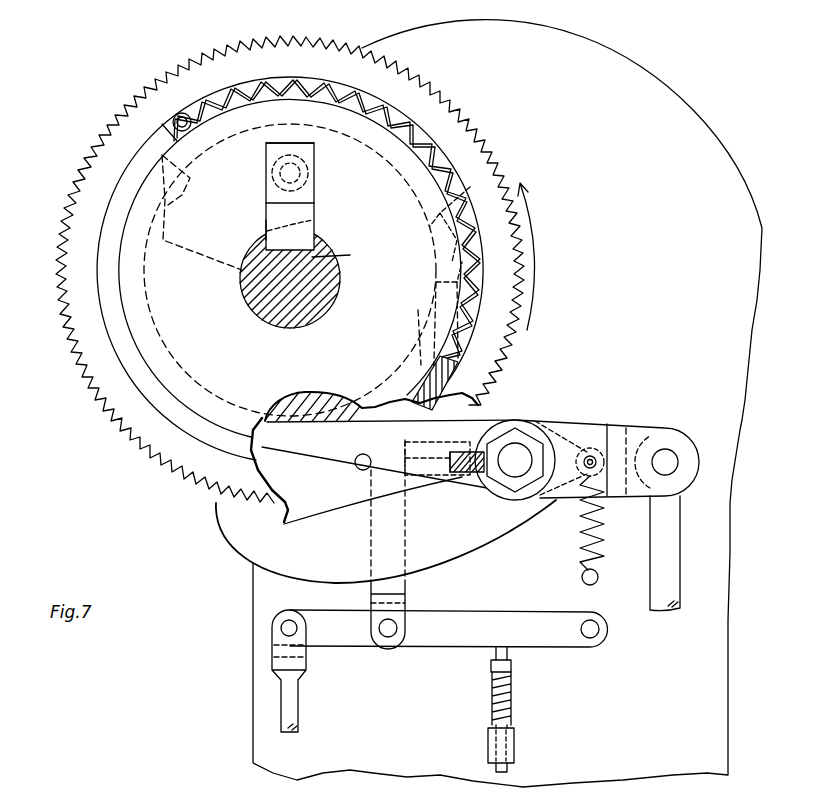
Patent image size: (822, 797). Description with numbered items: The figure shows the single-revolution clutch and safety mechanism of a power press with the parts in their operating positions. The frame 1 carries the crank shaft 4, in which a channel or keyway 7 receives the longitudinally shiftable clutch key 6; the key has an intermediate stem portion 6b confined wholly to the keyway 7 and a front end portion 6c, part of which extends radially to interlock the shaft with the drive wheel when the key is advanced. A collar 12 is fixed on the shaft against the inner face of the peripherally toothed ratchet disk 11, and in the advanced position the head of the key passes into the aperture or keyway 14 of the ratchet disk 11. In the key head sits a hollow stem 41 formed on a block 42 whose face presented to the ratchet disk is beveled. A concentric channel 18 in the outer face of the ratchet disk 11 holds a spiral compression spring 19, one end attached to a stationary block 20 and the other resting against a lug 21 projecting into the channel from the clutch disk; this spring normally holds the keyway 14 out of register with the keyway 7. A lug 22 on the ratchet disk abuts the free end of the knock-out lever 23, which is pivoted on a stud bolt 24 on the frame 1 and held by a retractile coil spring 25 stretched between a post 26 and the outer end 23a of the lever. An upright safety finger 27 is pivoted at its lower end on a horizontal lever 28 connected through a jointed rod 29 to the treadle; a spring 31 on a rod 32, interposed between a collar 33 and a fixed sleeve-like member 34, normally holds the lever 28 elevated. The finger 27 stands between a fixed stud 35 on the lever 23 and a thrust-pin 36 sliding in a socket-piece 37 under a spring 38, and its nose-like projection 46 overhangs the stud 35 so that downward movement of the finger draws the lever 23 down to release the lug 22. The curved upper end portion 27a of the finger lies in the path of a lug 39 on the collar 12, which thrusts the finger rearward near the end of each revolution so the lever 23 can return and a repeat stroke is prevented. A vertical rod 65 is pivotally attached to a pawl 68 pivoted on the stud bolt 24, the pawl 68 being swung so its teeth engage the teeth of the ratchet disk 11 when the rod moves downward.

The frame 1 is at (705, 131).
The crank shaft 4 is at (340, 286).
The clutch key 6 is at (298, 196).
The stem portion 6b is at (316, 218).
The front end portion 6c is at (265, 227).
The keyway 7 is at (337, 264).
The ratchet disk 11 is at (80, 217).
The collar 12 is at (300, 397).
The keyway 14 is at (316, 162).
The channel 18 is at (130, 377).
The spiral compression spring 19 is at (462, 273).
The block 20 is at (159, 119).
The lug 21 is at (448, 380).
The lug 22 is at (470, 187).
The knock-out lever 23 is at (311, 451).
The outer end of lever 23a is at (585, 445).
The stud bolt 24 is at (521, 452).
The retractile coil spring 25 is at (603, 528).
The post 26 is at (582, 575).
The safety finger 27 is at (378, 505).
The upper end portion of finger 27a is at (383, 392).
The lever 28 is at (455, 616).
The jointed rod 29 is at (283, 702).
The spring 31 is at (513, 699).
The rod 32 is at (493, 683).
The collar 33 is at (513, 667).
The sleeve-like member 34 is at (515, 752).
The stud 35 is at (361, 470).
The thrust-pin 36 is at (415, 476).
The socket-piece 37 is at (452, 474).
The spring 38 is at (472, 473).
The lug 39 is at (160, 178).
The hollow stem 41 is at (276, 166).
The block 42 is at (270, 187).
The nose-like projection 46 is at (357, 455).
The vertical rod 65 is at (681, 555).
The pawl 68 is at (258, 552).